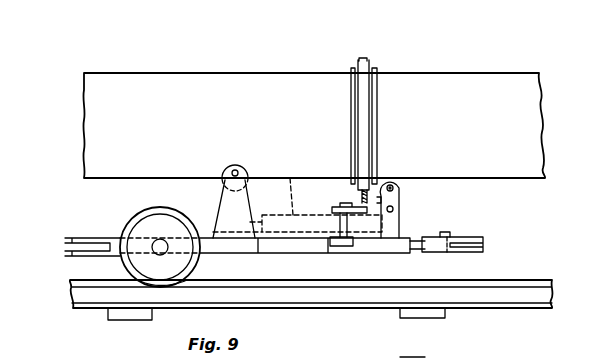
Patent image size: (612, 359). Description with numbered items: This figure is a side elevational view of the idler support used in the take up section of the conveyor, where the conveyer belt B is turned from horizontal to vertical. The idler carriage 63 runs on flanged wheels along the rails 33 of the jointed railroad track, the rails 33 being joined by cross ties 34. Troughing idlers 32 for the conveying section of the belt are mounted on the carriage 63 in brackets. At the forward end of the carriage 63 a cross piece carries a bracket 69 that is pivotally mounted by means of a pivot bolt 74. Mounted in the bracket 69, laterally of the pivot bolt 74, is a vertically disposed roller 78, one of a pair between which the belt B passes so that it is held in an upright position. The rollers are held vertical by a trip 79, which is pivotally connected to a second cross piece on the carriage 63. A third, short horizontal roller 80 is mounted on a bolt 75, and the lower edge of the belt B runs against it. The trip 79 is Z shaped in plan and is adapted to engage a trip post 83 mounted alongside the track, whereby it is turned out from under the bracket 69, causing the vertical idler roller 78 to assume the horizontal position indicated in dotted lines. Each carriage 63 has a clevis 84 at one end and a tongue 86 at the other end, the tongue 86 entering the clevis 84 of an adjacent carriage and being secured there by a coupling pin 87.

The conveyer belt B is at (487, 85).
The vertically disposed roller 78 is at (378, 85).
The trip 79 is at (331, 178).
The short horizontal roller 80 is at (410, 178).
The troughing idler 32 is at (240, 162).
The bracket 69 is at (394, 225).
The bolt 75 is at (396, 188).
The pivot bolt 74 is at (394, 212).
The idler carriage 63 is at (249, 251).
The clevis 84 is at (96, 238).
The tongue 86 is at (462, 245).
The coupling pin 87 is at (447, 232).
The rail 33 is at (92, 302).
The cross tie 34 is at (125, 313).
The trip post 83 is at (387, 353).